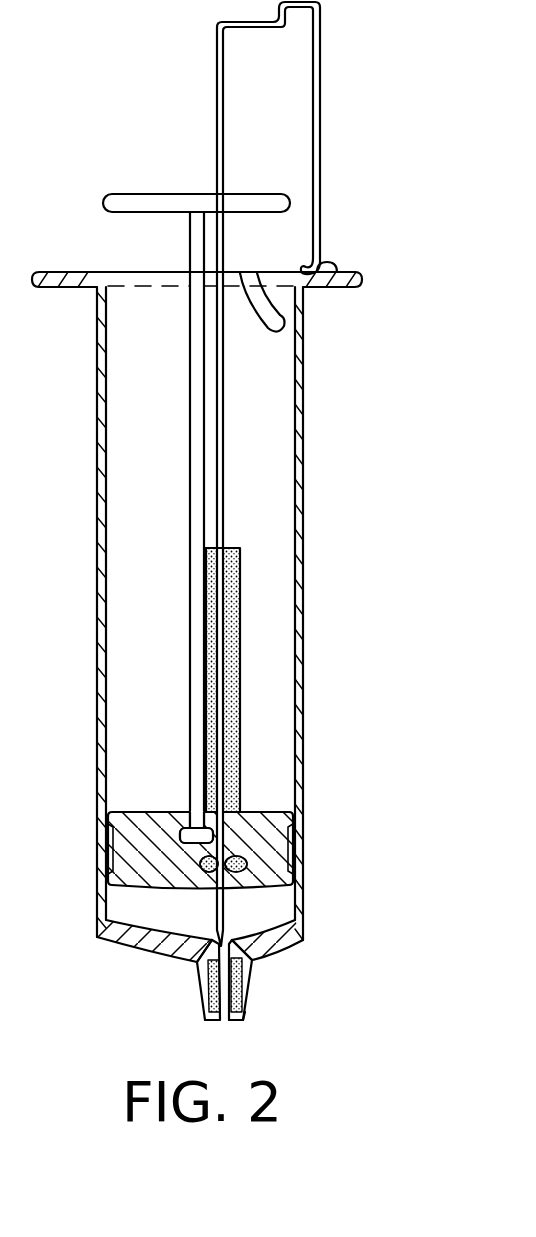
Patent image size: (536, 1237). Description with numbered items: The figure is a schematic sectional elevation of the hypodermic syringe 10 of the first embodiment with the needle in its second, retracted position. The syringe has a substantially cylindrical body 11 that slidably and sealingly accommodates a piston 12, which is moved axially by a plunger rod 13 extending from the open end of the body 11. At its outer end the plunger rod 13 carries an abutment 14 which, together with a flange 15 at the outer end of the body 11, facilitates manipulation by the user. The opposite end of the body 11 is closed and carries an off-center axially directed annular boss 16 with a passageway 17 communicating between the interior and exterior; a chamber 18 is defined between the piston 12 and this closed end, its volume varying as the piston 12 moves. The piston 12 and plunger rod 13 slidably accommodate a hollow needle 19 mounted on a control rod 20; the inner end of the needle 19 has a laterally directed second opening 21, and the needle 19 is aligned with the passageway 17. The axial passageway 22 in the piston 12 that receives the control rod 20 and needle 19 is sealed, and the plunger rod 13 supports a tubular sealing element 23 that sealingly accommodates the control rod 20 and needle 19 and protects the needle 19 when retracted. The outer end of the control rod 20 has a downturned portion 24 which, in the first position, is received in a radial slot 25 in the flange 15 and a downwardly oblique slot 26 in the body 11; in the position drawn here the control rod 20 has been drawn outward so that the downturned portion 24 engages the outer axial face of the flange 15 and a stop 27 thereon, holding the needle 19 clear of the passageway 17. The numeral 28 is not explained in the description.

The hypodermic syringe 10 is at (62, 828).
The body 11 is at (303, 411).
The piston 12 is at (272, 852).
The plunger rod 13 is at (190, 232).
The abutment 14 is at (147, 194).
The flange 15 is at (350, 288).
The annular boss 16 is at (252, 977).
The passageway 17 is at (207, 983).
The chamber 18 is at (137, 900).
The hollow needle 19 is at (227, 908).
The control rod 20 is at (230, 637).
The second opening 21 is at (222, 615).
The axial passageway 22 is at (235, 840).
The tubular sealing element 23 is at (237, 577).
The downturned portion 24 is at (320, 72).
The radial slot 25 is at (240, 280).
The oblique slot 26 is at (287, 283).
The stop 27 is at (338, 268).
The outlet 28 is at (243, 1027).